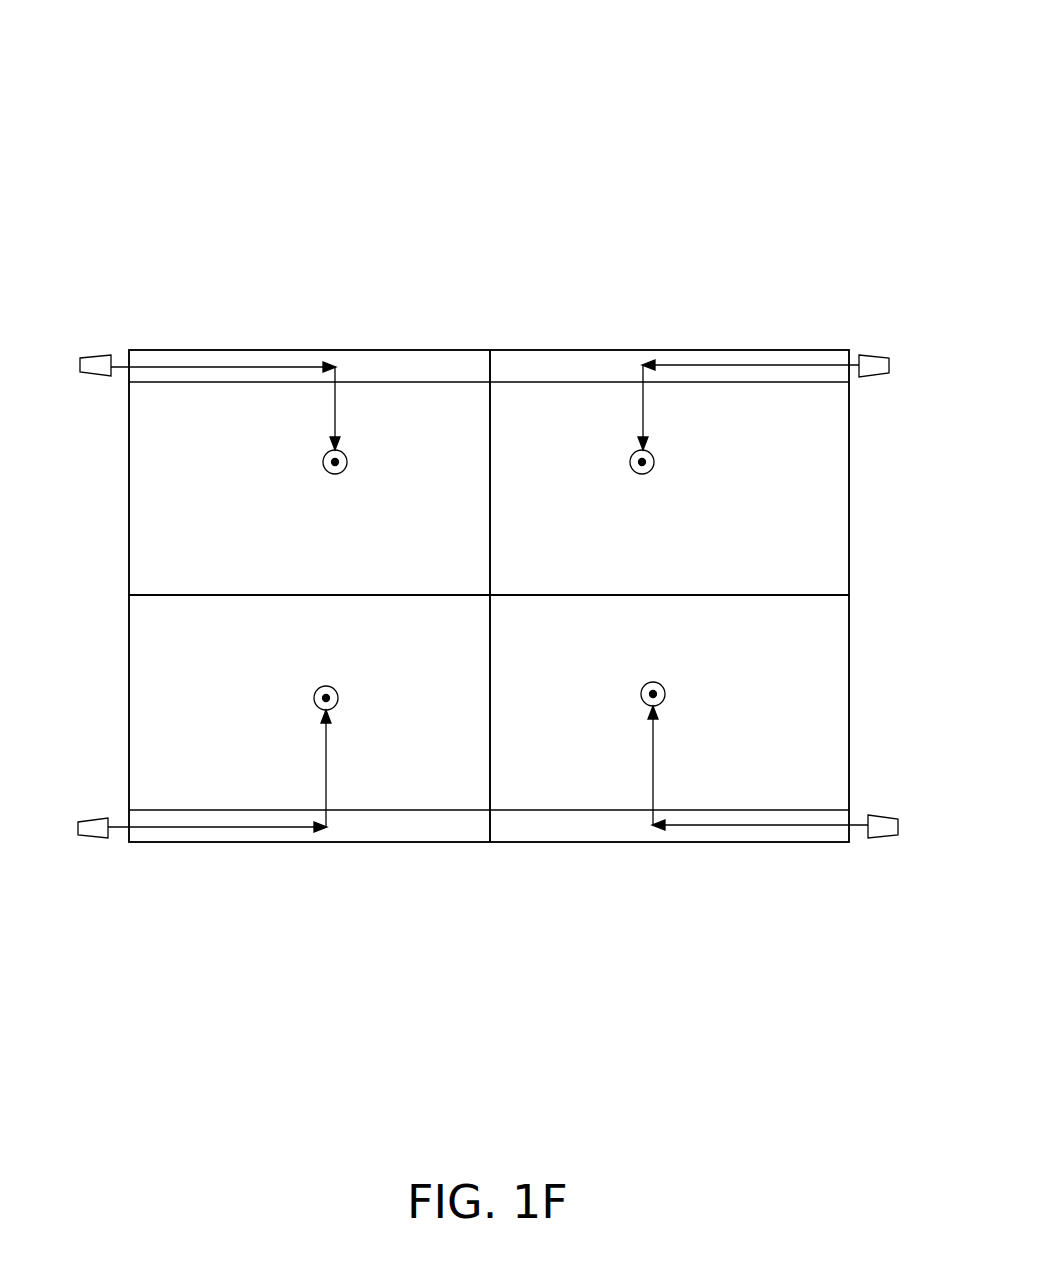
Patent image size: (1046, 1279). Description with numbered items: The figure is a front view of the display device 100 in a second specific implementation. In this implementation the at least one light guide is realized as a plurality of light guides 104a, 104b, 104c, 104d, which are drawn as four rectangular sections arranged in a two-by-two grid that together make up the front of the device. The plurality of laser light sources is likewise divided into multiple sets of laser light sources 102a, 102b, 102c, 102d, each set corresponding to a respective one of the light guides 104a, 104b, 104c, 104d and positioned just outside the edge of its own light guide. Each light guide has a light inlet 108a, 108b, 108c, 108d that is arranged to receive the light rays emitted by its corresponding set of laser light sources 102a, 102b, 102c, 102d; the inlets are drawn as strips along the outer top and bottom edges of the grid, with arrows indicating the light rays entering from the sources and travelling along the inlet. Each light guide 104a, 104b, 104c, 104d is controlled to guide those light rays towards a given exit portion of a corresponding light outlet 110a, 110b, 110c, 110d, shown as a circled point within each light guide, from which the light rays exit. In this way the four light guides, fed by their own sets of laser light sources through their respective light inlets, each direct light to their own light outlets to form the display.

The display device 100 is at (489, 421).
The set of laser light sources 102a is at (81, 406).
The set of laser light sources 102b is at (904, 407).
The set of laser light sources 102c is at (108, 875).
The set of laser light sources 102d is at (908, 869).
The light guide 104a is at (309, 384).
The light guide 104b is at (669, 383).
The light guide 104c is at (309, 806).
The light guide 104d is at (669, 806).
The light inlet 108a is at (220, 363).
The light inlet 108b is at (748, 364).
The light inlet 108c is at (219, 810).
The light inlet 108d is at (763, 811).
The light outlet 110a is at (216, 429).
The light outlet 110b is at (824, 429).
The light outlet 110c is at (215, 786).
The light outlet 110d is at (824, 786).